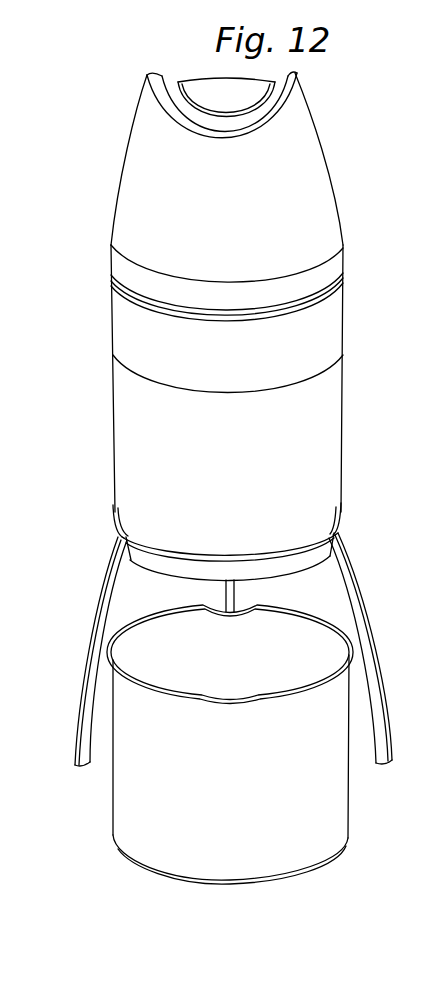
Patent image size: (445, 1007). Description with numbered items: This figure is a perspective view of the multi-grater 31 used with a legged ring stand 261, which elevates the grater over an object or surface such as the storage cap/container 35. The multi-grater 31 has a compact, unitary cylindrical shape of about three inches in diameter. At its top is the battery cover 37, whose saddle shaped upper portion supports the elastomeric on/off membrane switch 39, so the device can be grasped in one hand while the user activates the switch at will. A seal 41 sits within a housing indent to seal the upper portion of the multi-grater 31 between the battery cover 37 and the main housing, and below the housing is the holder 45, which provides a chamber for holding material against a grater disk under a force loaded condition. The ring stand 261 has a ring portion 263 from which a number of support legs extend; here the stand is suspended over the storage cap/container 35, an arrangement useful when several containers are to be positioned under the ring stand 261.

The multi-grater 31 is at (117, 115).
The battery cover 37 is at (318, 110).
The on/off membrane switch 39 is at (205, 93).
The seal 41 is at (338, 260).
The holder 45 is at (120, 448).
The ring stand 261 is at (353, 530).
The ring portion 263 is at (345, 517).
The storage cap/container 35 is at (118, 855).